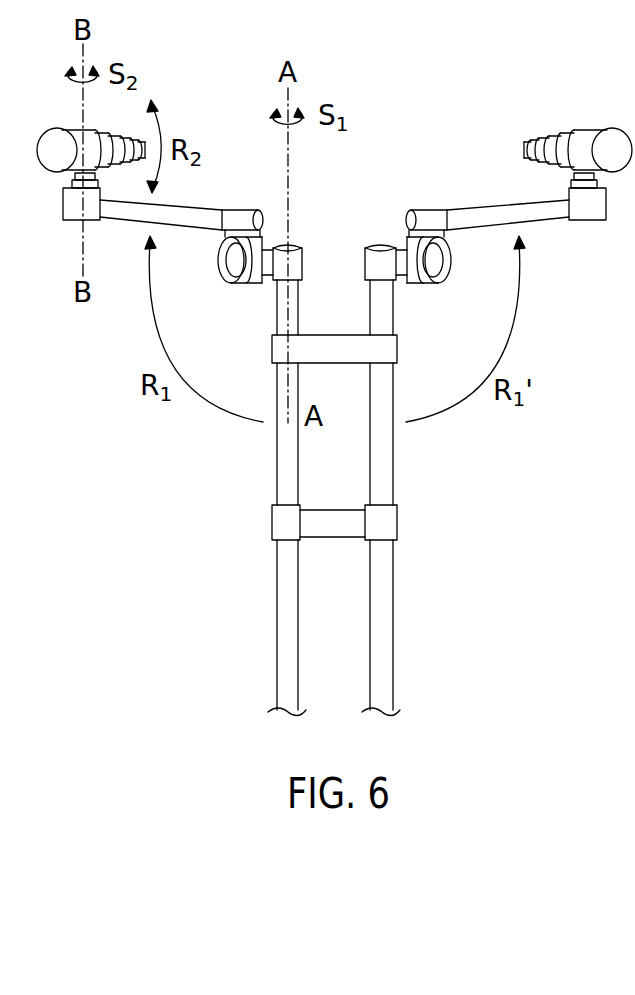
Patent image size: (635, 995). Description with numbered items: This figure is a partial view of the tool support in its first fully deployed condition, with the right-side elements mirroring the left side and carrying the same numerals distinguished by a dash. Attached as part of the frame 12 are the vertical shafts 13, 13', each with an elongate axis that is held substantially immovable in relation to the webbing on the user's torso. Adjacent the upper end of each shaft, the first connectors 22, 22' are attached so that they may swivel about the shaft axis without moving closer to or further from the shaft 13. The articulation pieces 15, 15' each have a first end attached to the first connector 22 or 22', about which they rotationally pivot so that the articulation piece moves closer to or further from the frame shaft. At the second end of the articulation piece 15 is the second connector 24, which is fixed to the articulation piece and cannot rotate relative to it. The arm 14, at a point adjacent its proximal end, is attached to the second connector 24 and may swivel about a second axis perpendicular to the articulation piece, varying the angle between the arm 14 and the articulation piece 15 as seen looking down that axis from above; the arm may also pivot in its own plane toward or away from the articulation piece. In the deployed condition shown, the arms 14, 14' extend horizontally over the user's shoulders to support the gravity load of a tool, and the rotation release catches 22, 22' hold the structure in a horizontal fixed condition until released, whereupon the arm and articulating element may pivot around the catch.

The frame 12 is at (410, 559).
The vertical shaft 13 is at (264, 480).
The vertical shaft 13' is at (411, 480).
The arm 14 is at (91, 126).
The arm 14' is at (579, 124).
The articulation piece 15 is at (181, 241).
The articulation piece 15' is at (488, 240).
The first connector 22 is at (242, 288).
The first connector 22' is at (427, 288).
The second connector 24 is at (63, 204).